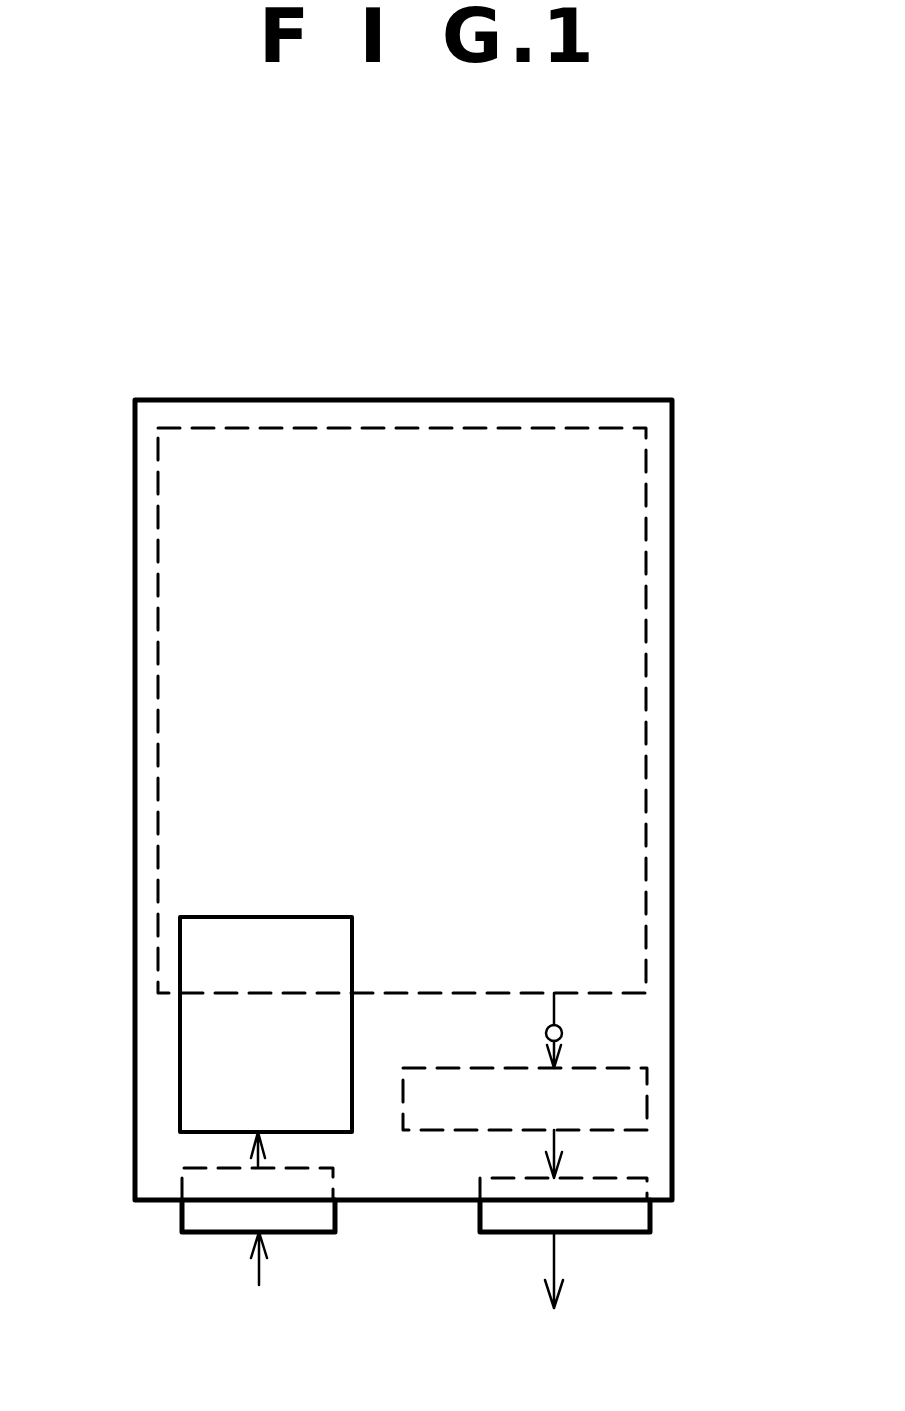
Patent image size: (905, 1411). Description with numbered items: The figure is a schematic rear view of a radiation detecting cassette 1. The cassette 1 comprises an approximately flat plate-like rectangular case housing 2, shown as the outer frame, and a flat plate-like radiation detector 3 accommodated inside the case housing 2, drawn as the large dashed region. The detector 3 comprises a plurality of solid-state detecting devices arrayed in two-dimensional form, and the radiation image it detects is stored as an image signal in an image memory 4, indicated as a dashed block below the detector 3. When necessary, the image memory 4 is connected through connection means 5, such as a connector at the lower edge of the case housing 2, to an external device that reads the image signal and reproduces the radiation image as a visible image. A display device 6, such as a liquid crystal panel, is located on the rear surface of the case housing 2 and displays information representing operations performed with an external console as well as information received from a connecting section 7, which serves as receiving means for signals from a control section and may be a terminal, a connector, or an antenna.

The radiation detecting cassette 1 is at (404, 318).
The case housing 2 is at (673, 465).
The radiation detector 3 is at (533, 428).
The image memory 4 is at (647, 1112).
The connection means 5 is at (615, 1233).
The display device 6 is at (198, 1030).
The connecting section 7 is at (218, 1222).